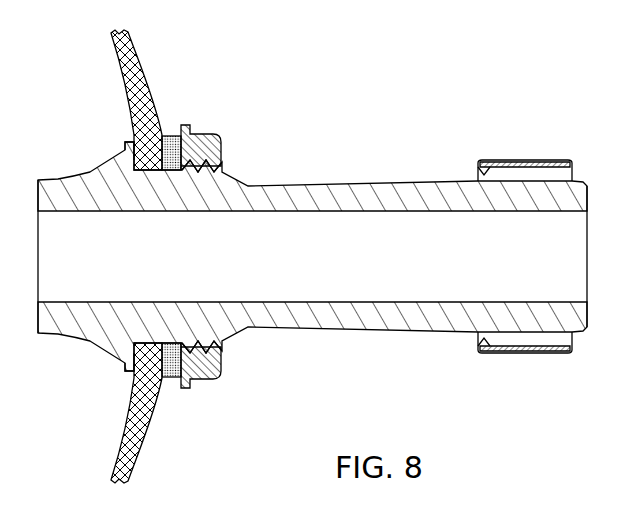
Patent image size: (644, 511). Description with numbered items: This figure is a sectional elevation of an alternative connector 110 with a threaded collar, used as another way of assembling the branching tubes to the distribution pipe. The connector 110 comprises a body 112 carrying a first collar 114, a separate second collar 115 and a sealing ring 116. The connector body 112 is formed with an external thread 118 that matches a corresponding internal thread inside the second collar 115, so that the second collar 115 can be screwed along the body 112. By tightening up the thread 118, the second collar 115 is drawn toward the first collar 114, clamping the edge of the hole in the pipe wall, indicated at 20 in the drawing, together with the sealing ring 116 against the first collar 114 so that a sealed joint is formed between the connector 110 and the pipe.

The connector 110 is at (312, 246).
The body 112 is at (338, 186).
The first collar 114 is at (128, 142).
The second collar 115 is at (222, 160).
The sealing ring 116 is at (173, 134).
The external thread 118 is at (218, 190).
The flexible seal 20 is at (140, 53).